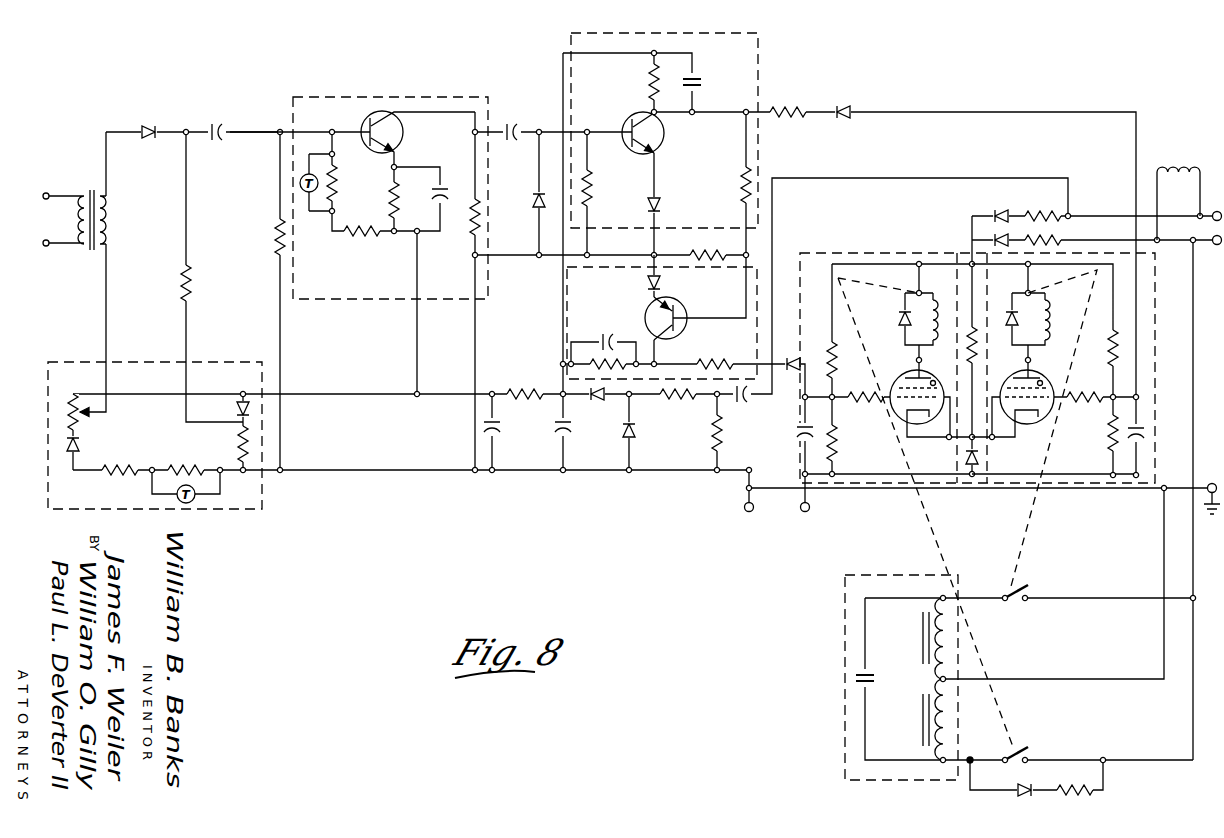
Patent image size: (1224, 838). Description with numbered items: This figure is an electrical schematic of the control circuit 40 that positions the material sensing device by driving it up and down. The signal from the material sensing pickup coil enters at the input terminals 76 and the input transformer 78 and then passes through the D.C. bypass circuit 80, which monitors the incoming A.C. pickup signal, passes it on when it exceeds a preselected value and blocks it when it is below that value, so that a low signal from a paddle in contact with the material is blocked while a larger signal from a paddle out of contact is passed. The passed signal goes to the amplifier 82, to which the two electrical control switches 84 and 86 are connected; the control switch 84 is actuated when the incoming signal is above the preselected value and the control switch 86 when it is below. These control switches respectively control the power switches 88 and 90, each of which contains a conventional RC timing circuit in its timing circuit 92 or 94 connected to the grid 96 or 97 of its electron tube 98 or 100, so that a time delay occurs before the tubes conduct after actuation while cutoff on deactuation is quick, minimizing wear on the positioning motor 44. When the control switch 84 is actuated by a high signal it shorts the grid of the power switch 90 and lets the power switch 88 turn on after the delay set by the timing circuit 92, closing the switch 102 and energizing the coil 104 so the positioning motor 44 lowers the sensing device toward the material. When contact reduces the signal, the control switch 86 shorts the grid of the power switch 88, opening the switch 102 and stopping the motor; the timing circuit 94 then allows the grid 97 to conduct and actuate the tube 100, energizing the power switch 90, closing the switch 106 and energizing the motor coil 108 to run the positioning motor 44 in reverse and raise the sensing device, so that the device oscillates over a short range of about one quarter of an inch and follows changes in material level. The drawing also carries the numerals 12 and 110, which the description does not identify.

The heater coil 12 is at (1172, 170).
The control circuit 40 is at (247, 131).
The positioning motor 44 is at (984, 681).
The input terminals 76 is at (46, 200).
The input transformer 78 is at (84, 192).
The D.C. bypass circuit 80 is at (262, 505).
The amplifier 82 is at (410, 97).
The electrical control switch 84 is at (758, 55).
The electrical control switch 86 is at (760, 247).
The power switch 88 is at (887, 372).
The power switch 90 is at (991, 372).
The RC timing circuit 92 is at (815, 480).
The RC timing circuit 94 is at (1058, 396).
The grid 96 is at (866, 398).
The grid 97 is at (1085, 400).
The electron tube 98 is at (893, 372).
The electron tube 100 is at (1050, 387).
The switch 102 is at (1032, 752).
The coil 104 is at (948, 719).
The switch 106 is at (1033, 589).
The motor coil 108 is at (948, 656).
The power supply terminals 110 is at (1210, 228).